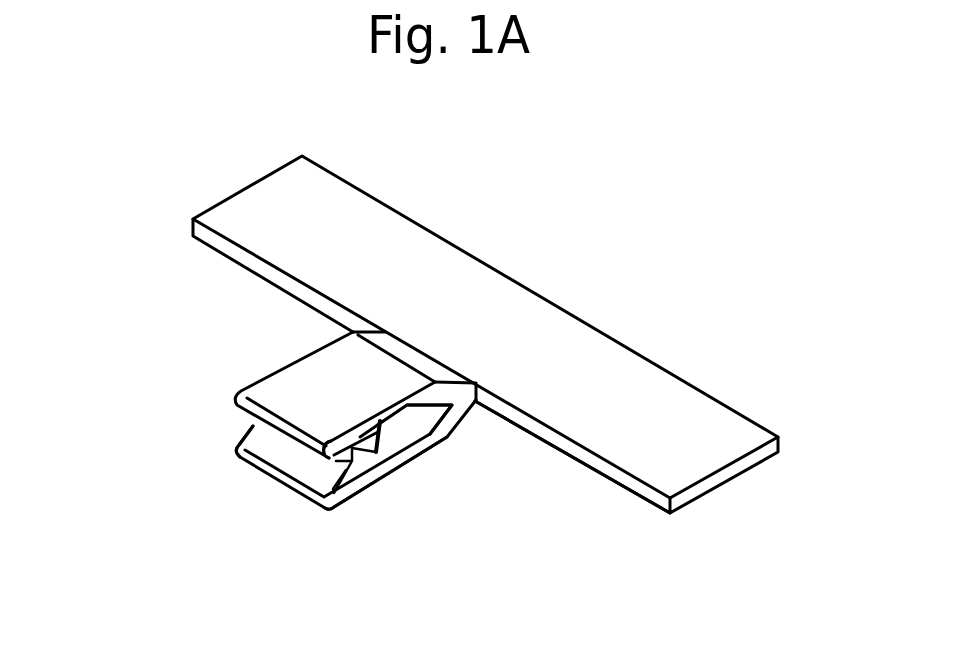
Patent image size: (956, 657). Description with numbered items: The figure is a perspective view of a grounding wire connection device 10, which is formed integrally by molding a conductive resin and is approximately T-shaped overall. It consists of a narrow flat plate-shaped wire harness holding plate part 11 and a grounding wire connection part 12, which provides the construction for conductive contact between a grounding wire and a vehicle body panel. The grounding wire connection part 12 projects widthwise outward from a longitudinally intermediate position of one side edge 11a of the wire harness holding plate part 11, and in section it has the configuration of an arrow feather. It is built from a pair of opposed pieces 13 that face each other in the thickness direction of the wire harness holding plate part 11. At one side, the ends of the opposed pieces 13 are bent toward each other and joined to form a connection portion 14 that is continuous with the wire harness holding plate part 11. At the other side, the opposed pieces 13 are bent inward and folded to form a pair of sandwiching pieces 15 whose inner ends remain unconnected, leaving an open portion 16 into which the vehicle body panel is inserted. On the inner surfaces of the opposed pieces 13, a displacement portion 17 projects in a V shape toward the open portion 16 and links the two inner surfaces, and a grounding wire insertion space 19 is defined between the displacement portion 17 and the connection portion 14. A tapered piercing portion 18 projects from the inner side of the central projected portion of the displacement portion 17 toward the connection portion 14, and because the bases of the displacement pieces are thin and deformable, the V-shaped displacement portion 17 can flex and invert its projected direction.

The grounding wire connection device 10 is at (433, 212).
The wire harness holding plate part 11 is at (690, 390).
The side edge 11a is at (605, 468).
The grounding wire connection part 12 is at (365, 396).
The opposed pieces 13 is at (323, 357).
The connection portion 14 is at (480, 387).
The sandwiching pieces 15 is at (336, 478).
The open portion 16 is at (245, 423).
The displacement portion 17 is at (355, 432).
The piercing portion 18 is at (415, 462).
The grounding wire insertion space 19 is at (421, 416).